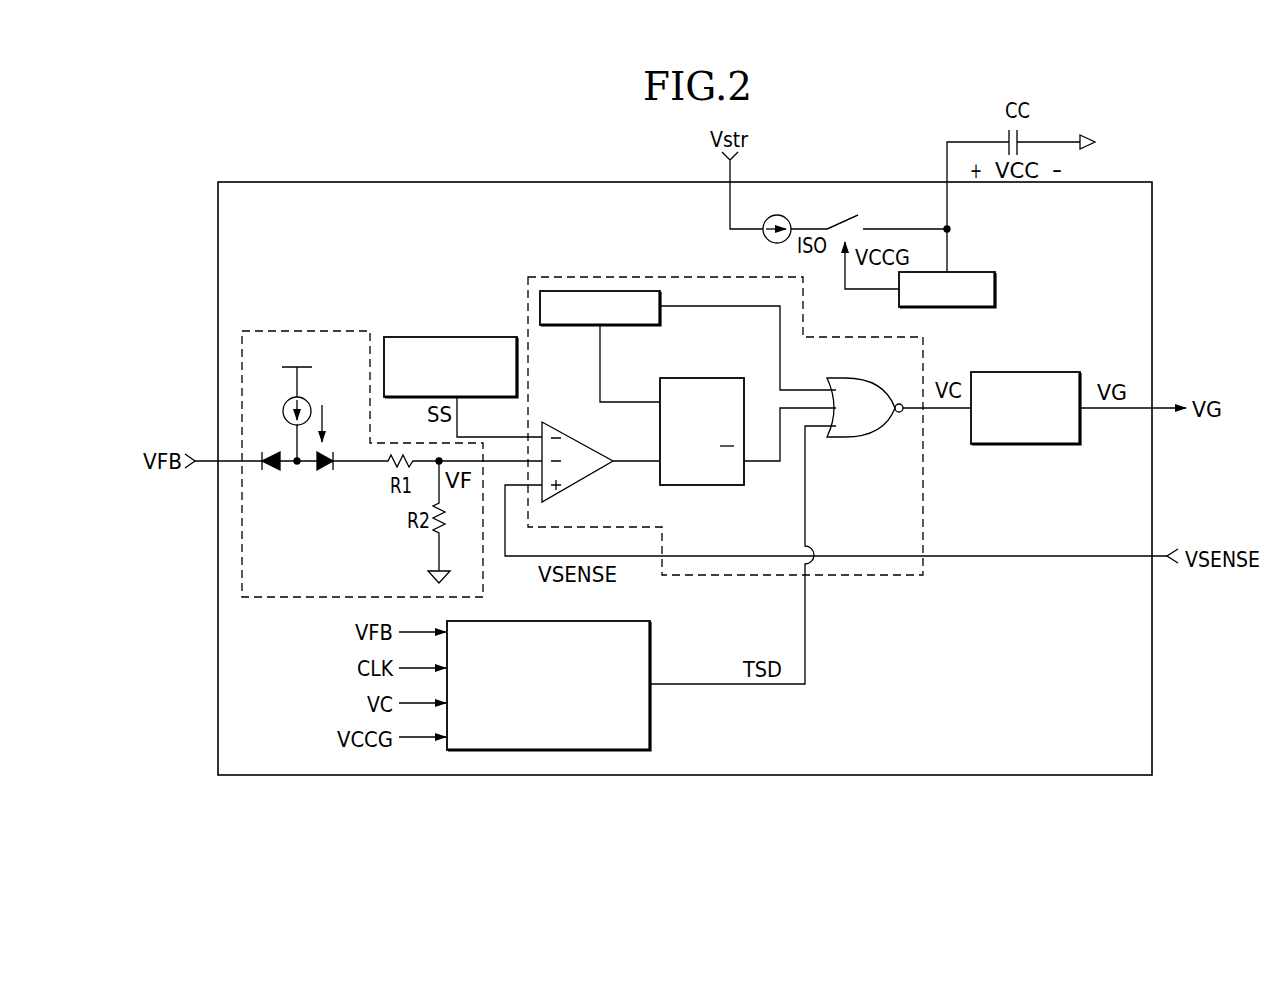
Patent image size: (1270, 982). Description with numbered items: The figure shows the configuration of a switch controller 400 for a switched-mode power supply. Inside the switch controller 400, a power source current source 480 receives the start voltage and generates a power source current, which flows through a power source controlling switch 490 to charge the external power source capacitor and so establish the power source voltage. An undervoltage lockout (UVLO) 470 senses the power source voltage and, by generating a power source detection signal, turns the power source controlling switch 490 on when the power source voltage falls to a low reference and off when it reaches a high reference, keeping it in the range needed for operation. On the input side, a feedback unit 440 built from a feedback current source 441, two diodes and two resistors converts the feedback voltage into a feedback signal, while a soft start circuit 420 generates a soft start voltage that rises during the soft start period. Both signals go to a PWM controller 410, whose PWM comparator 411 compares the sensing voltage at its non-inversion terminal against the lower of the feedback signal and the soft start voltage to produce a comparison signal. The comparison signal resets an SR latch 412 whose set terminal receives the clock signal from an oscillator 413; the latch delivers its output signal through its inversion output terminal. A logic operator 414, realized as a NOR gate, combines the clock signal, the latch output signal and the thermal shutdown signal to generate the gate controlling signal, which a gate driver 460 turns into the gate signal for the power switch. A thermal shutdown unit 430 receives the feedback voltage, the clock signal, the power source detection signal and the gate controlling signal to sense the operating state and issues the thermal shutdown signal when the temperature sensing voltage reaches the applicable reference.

The switch controller 400 is at (446, 182).
The PWM controller 410 is at (725, 480).
The PWM comparator 411 is at (580, 490).
The SR latch 412 is at (701, 486).
The oscillator 413 is at (640, 326).
The logic operator 414 is at (848, 438).
The soft start circuit 420 is at (411, 337).
The thermal shutdown unit 430 is at (651, 648).
The feedback unit 440 is at (362, 437).
The feedback current source 441 is at (308, 401).
The gate driver 460 is at (1025, 372).
The undervoltage lockout (UVLO) 470 is at (996, 290).
The power source current source 480 is at (763, 243).
The power source controlling switch 490 is at (840, 222).